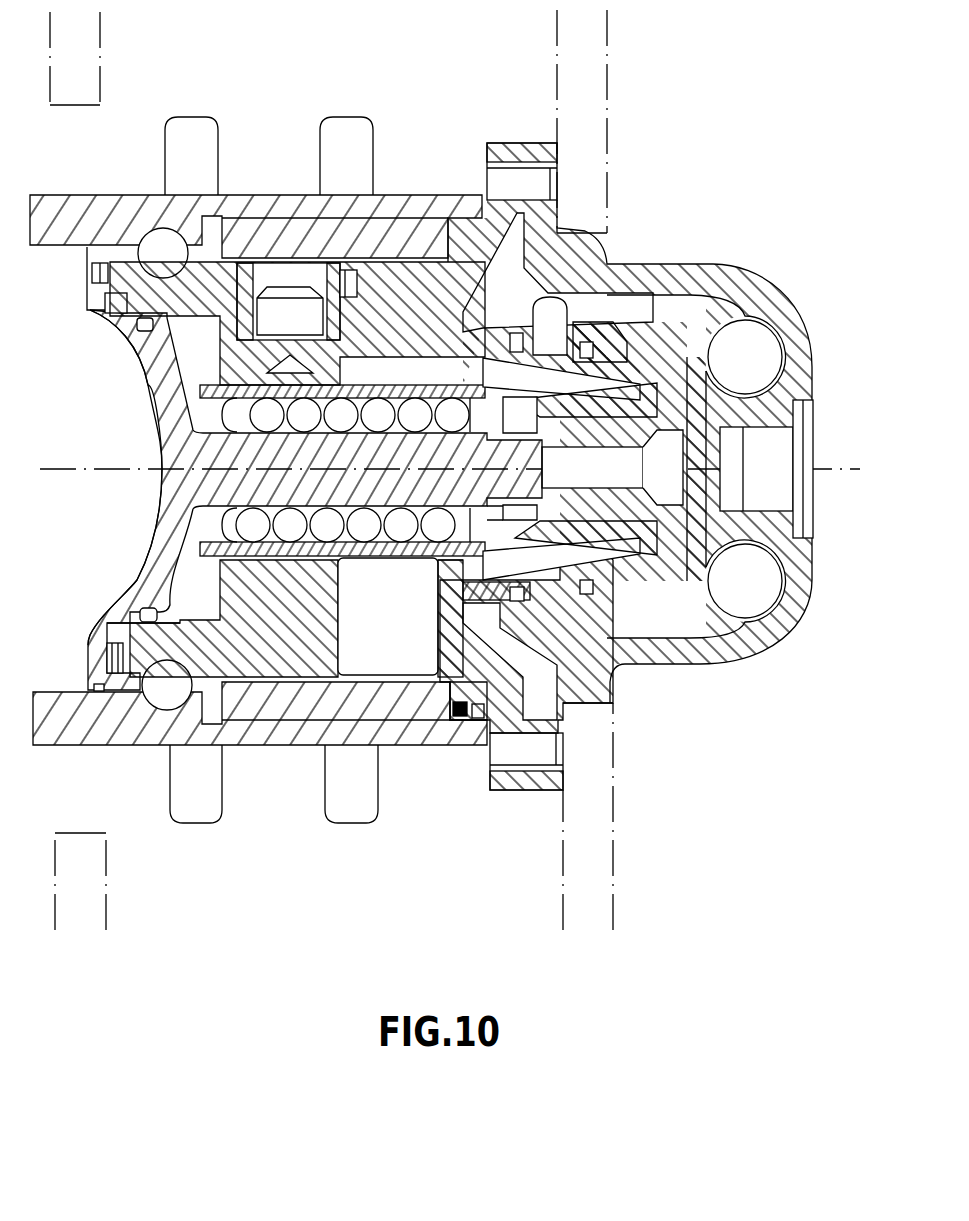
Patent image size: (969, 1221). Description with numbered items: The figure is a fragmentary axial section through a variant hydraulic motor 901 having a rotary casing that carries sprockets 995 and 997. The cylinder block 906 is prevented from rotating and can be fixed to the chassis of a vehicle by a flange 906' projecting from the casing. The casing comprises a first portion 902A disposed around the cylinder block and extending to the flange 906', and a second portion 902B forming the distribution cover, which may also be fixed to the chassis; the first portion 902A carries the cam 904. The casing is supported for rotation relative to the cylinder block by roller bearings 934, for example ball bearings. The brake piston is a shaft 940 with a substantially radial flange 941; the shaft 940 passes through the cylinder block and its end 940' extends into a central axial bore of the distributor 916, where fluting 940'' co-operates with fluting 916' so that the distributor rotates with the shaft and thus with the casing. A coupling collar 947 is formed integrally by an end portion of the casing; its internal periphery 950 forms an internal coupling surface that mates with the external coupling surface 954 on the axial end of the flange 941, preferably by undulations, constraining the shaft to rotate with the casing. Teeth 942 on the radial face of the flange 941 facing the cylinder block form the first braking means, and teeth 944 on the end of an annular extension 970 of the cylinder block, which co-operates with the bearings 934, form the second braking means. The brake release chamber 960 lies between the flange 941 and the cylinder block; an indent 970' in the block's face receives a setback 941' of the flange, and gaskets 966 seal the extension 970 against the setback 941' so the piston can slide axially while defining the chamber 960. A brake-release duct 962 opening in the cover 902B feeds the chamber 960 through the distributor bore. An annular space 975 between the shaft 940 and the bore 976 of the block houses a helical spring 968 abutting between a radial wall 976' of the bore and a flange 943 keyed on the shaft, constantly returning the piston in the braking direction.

The motor 901 is at (439, 86).
The first portion of the casing 902A is at (262, 204).
The second portion of the casing 902B is at (597, 255).
The cam 904 is at (405, 668).
The cylinder block 906 is at (388, 616).
The flange 906' is at (522, 150).
The distributor 916 is at (580, 414).
The fluting in the distributor 916' is at (612, 467).
The roller bearings 934 is at (144, 243).
The shaft 940 is at (288, 500).
The end of the shaft 940' is at (552, 501).
The fluting 940'' is at (586, 538).
The radial flange 941 is at (98, 389).
The setback 941' is at (91, 557).
The teeth 942 is at (103, 283).
The flange 943 is at (535, 597).
The teeth 944 is at (120, 310).
The coupling collar 947 is at (130, 730).
The internal periphery of the collar 950 is at (118, 305).
The external coupling surface 954 is at (68, 744).
The brake release chamber 960 is at (193, 390).
The brake-release duct 962 is at (783, 443).
The gaskets 966 is at (140, 327).
The helical spring 968 is at (363, 542).
The annular extension 970 is at (81, 667).
The indent 970' is at (189, 617).
The annular space 975 is at (415, 542).
The bore 976 is at (420, 359).
The radial wall of the bore 976' is at (340, 551).
The sprocket 995 is at (193, 125).
The sprocket 997 is at (350, 125).